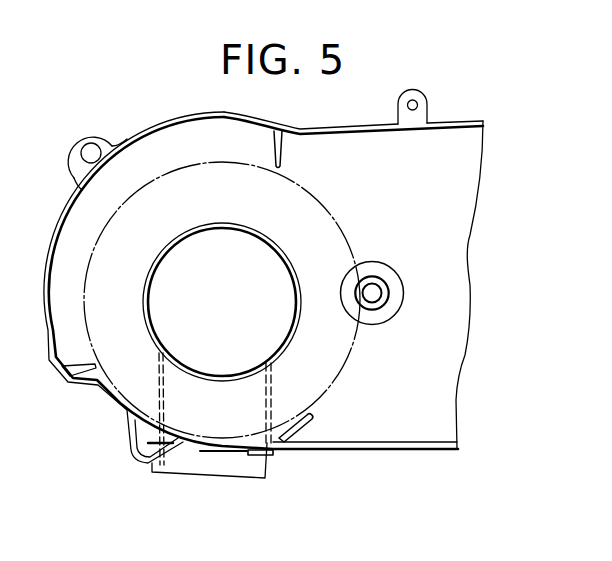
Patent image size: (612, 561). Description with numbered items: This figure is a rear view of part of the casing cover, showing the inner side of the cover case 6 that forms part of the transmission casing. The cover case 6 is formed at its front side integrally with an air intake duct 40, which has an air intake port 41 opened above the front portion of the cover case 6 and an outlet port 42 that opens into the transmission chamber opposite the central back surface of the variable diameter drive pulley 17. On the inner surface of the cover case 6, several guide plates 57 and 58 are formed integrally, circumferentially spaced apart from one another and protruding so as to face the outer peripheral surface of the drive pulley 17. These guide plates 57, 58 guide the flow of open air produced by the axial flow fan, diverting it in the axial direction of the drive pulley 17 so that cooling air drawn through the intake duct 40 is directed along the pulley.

The cover case 6 is at (443, 123).
The guide plate 58 is at (282, 151).
The variable diameter drive pulley 17 is at (327, 208).
The outlet port 42 is at (283, 296).
The air intake duct 40 is at (270, 395).
The guide plate 57 is at (78, 362).
The air intake port 41 is at (235, 466).